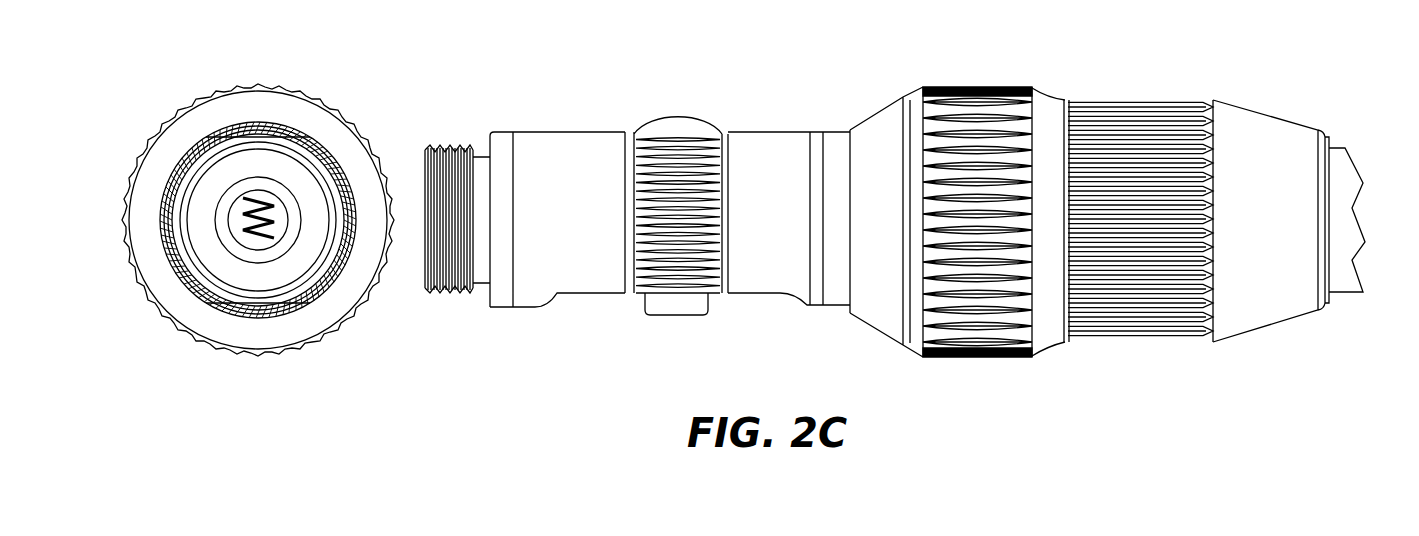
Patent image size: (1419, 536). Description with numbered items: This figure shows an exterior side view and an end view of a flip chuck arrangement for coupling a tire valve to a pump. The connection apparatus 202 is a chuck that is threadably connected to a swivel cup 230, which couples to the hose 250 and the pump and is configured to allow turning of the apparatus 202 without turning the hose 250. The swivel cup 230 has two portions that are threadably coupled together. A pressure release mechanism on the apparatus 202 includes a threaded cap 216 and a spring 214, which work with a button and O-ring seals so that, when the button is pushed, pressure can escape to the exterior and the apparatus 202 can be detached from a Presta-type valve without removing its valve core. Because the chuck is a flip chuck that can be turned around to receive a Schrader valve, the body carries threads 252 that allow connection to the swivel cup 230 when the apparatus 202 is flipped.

The connection apparatus 202 is at (327, 170).
The spring 214 is at (257, 237).
The threaded cap 216 is at (287, 123).
The swivel cup 230 is at (261, 92).
The hose 250 is at (1333, 146).
The threads 252 is at (443, 147).